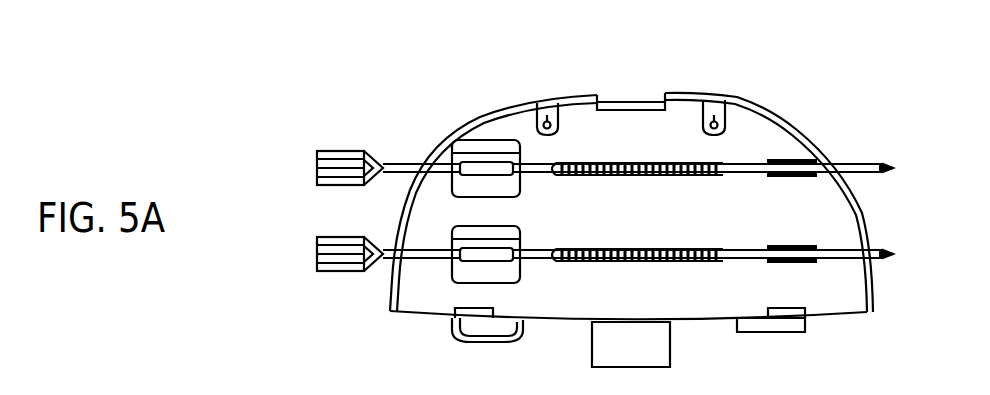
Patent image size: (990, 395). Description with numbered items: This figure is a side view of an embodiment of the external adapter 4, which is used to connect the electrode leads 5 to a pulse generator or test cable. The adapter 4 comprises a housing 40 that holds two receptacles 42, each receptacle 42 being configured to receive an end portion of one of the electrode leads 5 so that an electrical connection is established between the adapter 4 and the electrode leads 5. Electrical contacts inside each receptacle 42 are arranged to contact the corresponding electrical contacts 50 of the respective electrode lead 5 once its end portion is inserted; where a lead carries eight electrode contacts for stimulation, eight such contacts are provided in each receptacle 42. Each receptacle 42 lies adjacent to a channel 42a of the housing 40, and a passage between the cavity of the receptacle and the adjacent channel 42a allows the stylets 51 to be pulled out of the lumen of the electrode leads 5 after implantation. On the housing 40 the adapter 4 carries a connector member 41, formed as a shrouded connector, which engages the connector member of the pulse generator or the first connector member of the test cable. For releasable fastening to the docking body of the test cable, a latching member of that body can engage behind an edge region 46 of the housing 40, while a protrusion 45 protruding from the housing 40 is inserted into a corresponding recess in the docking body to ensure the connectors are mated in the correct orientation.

The external adapter 4 is at (415, 123).
The electrode lead 5 is at (895, 168).
The housing 40 is at (688, 120).
The connector member 41 is at (658, 345).
The receptacle 42 is at (744, 170).
The channel 42a is at (473, 174).
The protrusion 45 is at (487, 342).
The edge region 46 is at (628, 110).
The electrical contacts 50 is at (580, 162).
The stylet 51 is at (316, 168).